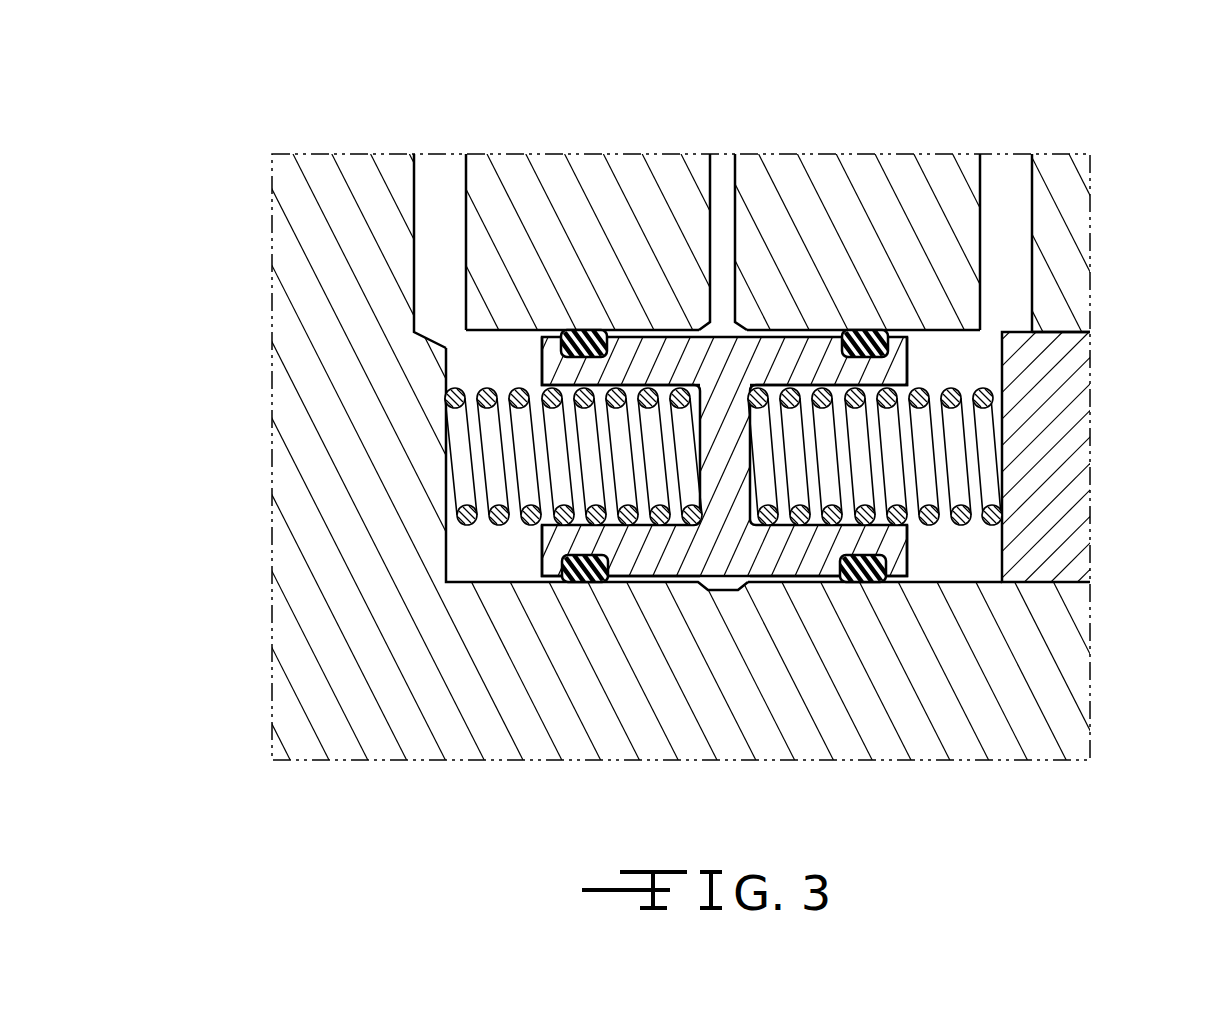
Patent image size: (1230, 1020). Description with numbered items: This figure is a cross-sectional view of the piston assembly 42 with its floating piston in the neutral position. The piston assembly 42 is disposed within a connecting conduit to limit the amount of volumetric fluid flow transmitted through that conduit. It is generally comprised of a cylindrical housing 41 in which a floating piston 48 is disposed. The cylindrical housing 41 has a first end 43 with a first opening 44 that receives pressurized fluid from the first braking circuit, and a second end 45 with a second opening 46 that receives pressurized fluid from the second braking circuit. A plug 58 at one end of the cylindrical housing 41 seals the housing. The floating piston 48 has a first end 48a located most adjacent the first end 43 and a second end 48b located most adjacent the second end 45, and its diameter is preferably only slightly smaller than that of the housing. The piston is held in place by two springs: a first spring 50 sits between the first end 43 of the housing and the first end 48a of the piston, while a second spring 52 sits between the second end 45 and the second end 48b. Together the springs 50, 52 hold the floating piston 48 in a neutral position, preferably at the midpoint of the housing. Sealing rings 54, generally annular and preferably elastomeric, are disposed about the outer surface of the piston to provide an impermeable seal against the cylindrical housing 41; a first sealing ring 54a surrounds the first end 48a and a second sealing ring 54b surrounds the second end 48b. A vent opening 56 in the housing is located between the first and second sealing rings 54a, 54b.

The cylindrical housing 41 is at (478, 557).
The piston assembly 42 is at (352, 106).
The first end 43 is at (445, 488).
The first opening 44 is at (444, 172).
The second end 45 is at (995, 457).
The second opening 46 is at (1015, 170).
The floating piston 48 is at (684, 580).
The first end of the floating piston 48a is at (543, 568).
The second end of the floating piston 48b is at (902, 568).
The first spring 50 is at (455, 426).
The second spring 52 is at (930, 527).
The sealing rings 54 is at (587, 594).
The first sealing ring 54a is at (600, 333).
The second sealing ring 54b is at (868, 332).
The vent opening 56 is at (725, 168).
The plug 58 is at (1055, 516).